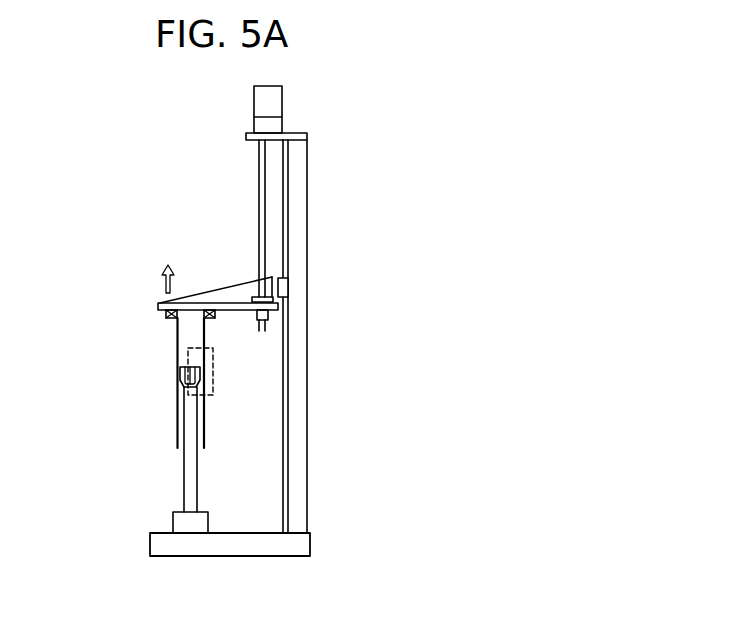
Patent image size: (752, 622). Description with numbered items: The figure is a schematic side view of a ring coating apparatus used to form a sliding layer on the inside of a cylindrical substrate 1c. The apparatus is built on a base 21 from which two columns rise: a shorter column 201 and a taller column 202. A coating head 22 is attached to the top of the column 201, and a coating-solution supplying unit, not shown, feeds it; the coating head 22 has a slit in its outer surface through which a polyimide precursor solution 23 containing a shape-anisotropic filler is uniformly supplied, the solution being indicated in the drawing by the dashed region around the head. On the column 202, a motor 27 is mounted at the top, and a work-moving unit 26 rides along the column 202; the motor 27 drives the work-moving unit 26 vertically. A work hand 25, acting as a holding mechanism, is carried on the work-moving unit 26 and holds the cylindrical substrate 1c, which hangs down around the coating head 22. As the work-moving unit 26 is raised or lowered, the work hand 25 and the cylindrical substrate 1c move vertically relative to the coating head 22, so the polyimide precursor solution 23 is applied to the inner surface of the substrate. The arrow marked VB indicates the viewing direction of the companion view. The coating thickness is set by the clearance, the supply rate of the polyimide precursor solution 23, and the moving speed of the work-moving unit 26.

The motor 27 is at (276, 126).
The work-moving unit 26 is at (270, 282).
The work hand 25 is at (165, 315).
The polyimide precursor solution 23 is at (200, 358).
The coating head 22 is at (179, 378).
The cylindrical substrate 1c is at (205, 415).
The column 201 is at (190, 475).
The column 202 is at (297, 503).
The base 21 is at (182, 552).
The view direction VB is at (179, 358).